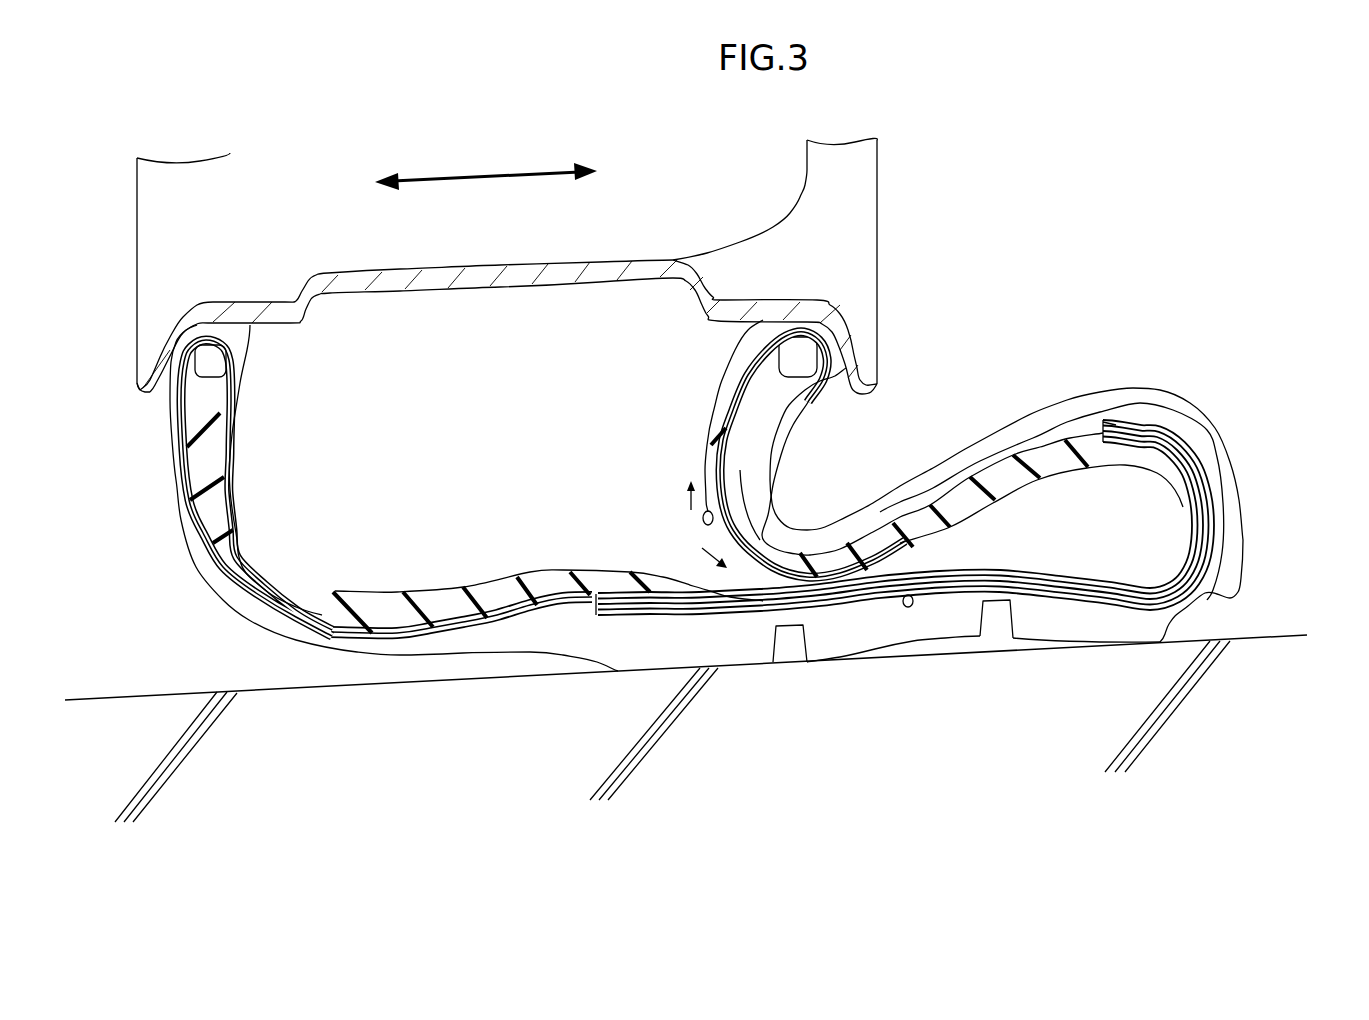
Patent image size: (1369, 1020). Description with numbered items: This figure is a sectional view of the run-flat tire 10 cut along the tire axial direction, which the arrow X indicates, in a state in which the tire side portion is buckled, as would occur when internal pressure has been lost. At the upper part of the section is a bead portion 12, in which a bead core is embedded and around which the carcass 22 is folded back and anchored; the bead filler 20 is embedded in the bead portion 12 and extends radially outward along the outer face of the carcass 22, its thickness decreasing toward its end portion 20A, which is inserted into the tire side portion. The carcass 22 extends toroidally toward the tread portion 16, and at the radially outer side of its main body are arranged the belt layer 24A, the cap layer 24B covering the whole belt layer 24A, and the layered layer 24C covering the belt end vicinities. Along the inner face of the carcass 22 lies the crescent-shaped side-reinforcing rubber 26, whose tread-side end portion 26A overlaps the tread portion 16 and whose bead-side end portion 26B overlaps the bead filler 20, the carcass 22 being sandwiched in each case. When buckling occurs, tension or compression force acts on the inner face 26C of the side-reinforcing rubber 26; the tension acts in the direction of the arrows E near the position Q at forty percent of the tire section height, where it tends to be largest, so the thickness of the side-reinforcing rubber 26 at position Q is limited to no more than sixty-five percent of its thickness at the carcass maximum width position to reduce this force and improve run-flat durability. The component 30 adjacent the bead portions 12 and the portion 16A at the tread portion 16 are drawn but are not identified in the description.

The run-flat tire 10 is at (1283, 514).
The bead portion 12 is at (262, 343).
The tread portion 16 is at (917, 658).
The shoulder portion 16A is at (1228, 600).
The bead filler 20 is at (222, 445).
The end portion of the bead filler 20A is at (776, 508).
The carcass 22 is at (978, 455).
The belt layer 24A is at (953, 567).
The cap layer 24B is at (900, 595).
The layered layer 24C is at (1192, 470).
The side-reinforcing rubber 26 is at (1009, 505).
The end portion of the side-reinforcing rubber 26A is at (1186, 512).
The end portion of the side-reinforcing rubber 26B is at (707, 458).
The inner face of the side-reinforcing rubber 26C is at (1047, 488).
The rim 30 is at (890, 218).
The arrow indicating the tire width direction X is at (492, 176).
The position at forty percent of the tire section height Q is at (712, 512).
The arrows indicating direction of tension force E is at (697, 524).